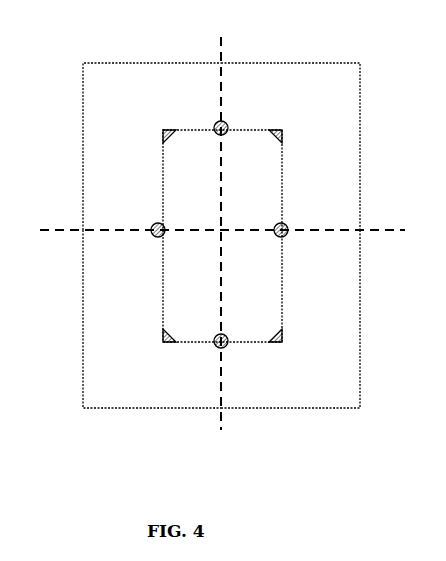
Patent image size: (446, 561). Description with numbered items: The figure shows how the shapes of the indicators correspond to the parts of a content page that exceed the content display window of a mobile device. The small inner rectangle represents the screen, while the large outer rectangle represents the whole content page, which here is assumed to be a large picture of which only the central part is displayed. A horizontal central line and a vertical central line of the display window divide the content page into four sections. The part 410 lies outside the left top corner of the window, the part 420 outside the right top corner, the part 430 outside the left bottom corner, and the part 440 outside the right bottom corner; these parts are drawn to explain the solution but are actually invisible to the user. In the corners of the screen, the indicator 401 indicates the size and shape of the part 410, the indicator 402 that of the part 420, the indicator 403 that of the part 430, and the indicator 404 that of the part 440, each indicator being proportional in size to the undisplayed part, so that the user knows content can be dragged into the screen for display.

The part of the content page outside the left top corner 410 is at (107, 69).
The part of the content page outside the right top corner 420 is at (337, 72).
The part of the content page outside the left bottom corner 430 is at (99, 402).
The part of the content page outside the right bottom corner 440 is at (333, 403).
The indicator 401 is at (168, 136).
The indicator 402 is at (275, 136).
The indicator 403 is at (168, 330).
The indicator 404 is at (276, 330).